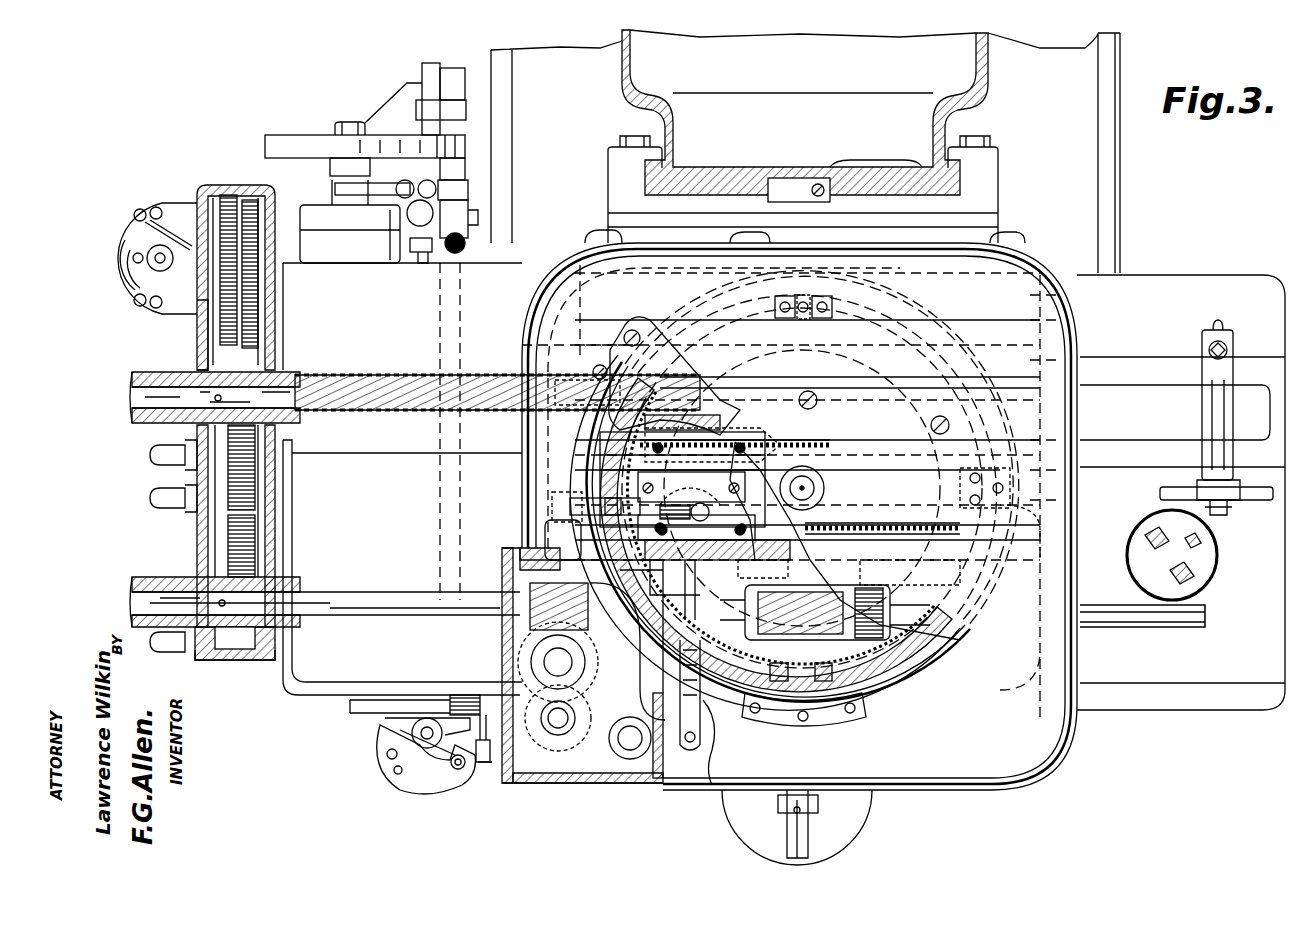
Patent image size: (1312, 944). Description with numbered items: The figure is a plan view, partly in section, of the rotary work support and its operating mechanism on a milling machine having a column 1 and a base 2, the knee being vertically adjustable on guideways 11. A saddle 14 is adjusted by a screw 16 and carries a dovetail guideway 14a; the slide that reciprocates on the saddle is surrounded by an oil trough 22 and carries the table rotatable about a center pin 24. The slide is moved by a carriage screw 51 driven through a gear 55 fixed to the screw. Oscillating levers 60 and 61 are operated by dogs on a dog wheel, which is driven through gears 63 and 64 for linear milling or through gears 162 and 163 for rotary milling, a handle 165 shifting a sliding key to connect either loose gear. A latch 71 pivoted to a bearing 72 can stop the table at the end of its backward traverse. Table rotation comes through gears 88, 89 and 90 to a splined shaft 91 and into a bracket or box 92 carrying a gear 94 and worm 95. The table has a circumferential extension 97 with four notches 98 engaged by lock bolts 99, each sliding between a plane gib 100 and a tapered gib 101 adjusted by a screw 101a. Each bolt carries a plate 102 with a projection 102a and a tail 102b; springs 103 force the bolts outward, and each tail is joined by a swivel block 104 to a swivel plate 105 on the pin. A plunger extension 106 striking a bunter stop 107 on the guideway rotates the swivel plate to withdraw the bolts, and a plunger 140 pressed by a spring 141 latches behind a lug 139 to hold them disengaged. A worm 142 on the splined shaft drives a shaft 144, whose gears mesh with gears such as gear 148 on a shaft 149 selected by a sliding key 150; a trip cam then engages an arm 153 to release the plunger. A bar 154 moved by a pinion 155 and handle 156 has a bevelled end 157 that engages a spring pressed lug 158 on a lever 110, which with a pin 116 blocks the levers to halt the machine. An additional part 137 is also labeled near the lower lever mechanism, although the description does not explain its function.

The column 1 is at (620, 42).
The base 2 is at (1100, 163).
The guideways 11 is at (638, 185).
The saddle 14 is at (1175, 690).
The dovetail guideway 14a is at (1133, 357).
The screw 16 is at (815, 832).
The oil trough 22 is at (998, 775).
The center pin 24 is at (824, 488).
The carriage screw 51 is at (370, 375).
The gear 55 is at (262, 372).
The oscillating lever 60 is at (458, 182).
The oscillating lever 61 is at (426, 66).
The gear 63 is at (255, 310).
The gear 64 is at (250, 186).
The latch 71 is at (390, 215).
The bearing 72 is at (330, 172).
The gear 88 is at (255, 485).
The gear 89 is at (255, 530).
The gear 90 is at (240, 648).
The splined shaft 91 is at (378, 592).
The bracket or box 92 is at (870, 665).
The gear 94 is at (803, 486).
The worm 95 is at (760, 630).
The circumferential extension 97 is at (664, 376).
The notches 98 is at (860, 315).
The lock bolts 99 is at (930, 440).
The plane gib 100 is at (600, 445).
The tapered gib 101 is at (691, 496).
The screw 101a is at (556, 540).
The plate 102 is at (788, 402).
The projection 102a is at (578, 393).
The tail 102b is at (755, 605).
The spring 103 is at (700, 415).
The swivel block 104 is at (775, 540).
The swivel plate 105 is at (845, 541).
The plunger extension 106 is at (552, 500).
The bunter stop 107 is at (1160, 492).
The lever 110 is at (470, 222).
The pin 116 is at (466, 243).
The knob 137 is at (484, 765).
The lug 139 is at (714, 537).
The plunger 140 is at (690, 583).
The spring 141 is at (705, 712).
The worm 142 is at (532, 585).
The shaft 144 is at (556, 662).
The gear 148 is at (600, 760).
The shaft 149 is at (548, 783).
The sliding key 150 is at (482, 695).
The arm 153 is at (565, 730).
The bar 154 is at (465, 350).
The pinion 155 is at (412, 733).
The handle 156 is at (445, 770).
The bevelled end 157 is at (458, 250).
The spring pressed lug 158 is at (423, 263).
The gear 162 is at (280, 135).
The gear 163 is at (205, 186).
The handle 165 is at (135, 240).